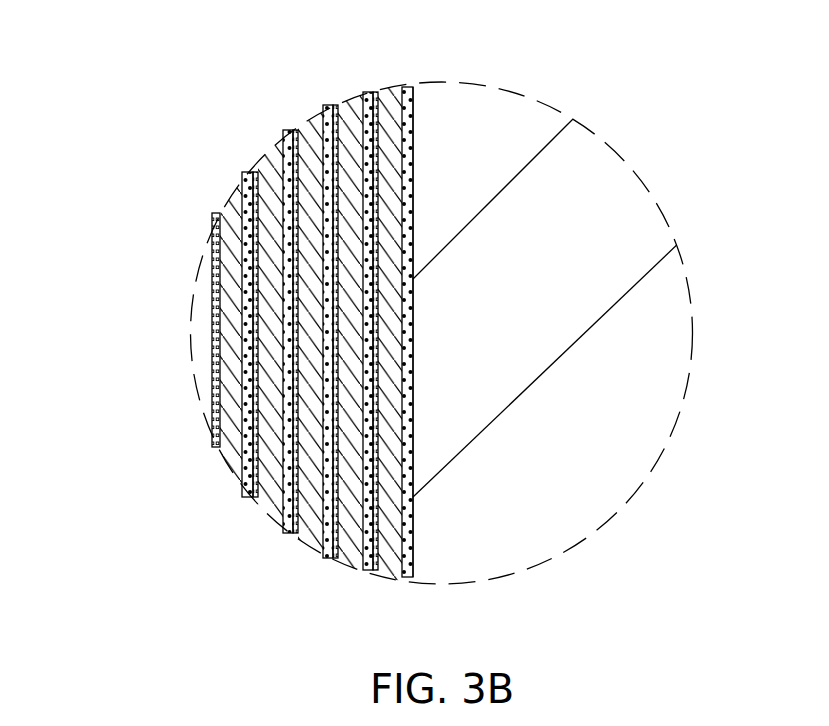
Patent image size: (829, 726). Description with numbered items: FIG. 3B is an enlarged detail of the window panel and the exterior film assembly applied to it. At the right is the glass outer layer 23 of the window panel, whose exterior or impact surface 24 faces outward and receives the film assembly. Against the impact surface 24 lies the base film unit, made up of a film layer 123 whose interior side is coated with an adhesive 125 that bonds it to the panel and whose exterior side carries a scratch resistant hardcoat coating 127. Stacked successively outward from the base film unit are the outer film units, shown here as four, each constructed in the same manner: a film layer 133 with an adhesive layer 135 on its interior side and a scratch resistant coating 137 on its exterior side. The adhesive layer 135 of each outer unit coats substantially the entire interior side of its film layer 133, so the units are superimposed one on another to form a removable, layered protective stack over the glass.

The glass outer layer 23 is at (531, 333).
The exterior or impact surface 24 is at (413, 114).
The film layer 123 is at (398, 570).
The adhesive 125 is at (418, 558).
The scratch resistant hardcoat coating 127 is at (378, 571).
The film layer 133 is at (350, 108).
The adhesive layer 135 is at (363, 100).
The scratch resistant coating 137 is at (375, 97).